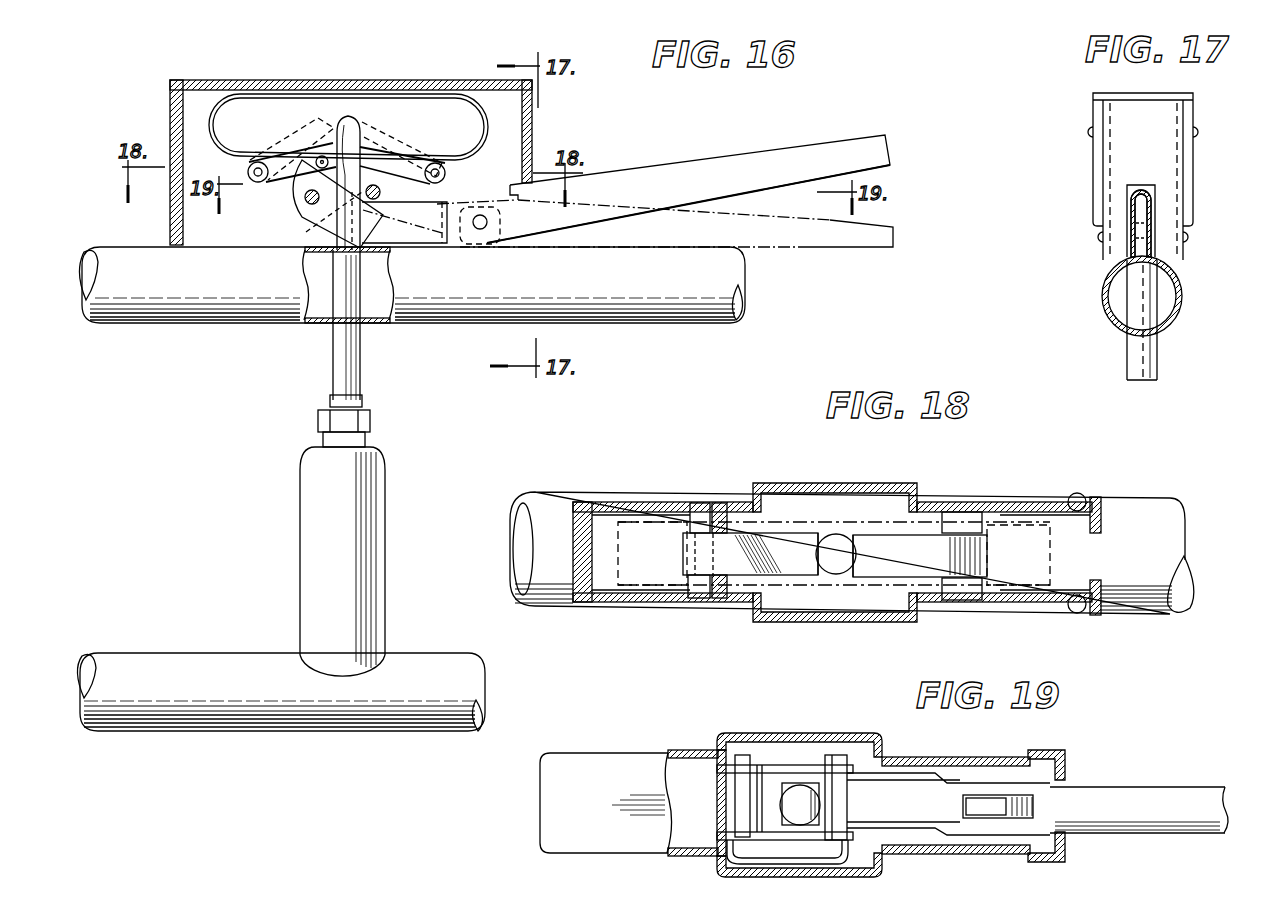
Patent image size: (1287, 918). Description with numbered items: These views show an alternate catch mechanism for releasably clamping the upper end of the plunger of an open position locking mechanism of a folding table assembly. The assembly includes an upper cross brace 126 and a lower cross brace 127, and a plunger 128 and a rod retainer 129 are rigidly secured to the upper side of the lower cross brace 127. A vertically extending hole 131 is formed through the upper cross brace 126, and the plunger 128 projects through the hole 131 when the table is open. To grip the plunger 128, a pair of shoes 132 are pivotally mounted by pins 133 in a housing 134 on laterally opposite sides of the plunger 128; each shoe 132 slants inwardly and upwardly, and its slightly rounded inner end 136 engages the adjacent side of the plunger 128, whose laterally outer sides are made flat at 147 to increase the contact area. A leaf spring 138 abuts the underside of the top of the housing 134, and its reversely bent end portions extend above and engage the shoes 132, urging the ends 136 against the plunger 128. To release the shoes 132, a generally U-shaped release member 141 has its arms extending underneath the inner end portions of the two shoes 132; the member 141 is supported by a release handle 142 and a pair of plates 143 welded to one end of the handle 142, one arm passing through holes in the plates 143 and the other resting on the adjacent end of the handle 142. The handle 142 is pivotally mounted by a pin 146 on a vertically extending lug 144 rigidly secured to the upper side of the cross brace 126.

In FIG. 16, the upper cross brace 126 is at (684, 322).
In FIG. 17, the upper cross brace 126 is at (1181, 307).
In FIG. 18, the upper cross brace 126 is at (552, 610).
In FIG. 16, the lower cross brace 127 is at (141, 658).
In FIG. 16, the plunger 128 is at (343, 370).
In FIG. 17, the plunger 128 is at (1158, 362).
In FIG. 18, the plunger 128 is at (838, 578).
In FIG. 16, the rod retainer 129 is at (302, 498).
In FIG. 16, the vertically extending hole 131 is at (362, 334).
In FIG. 16, the shoes 132 is at (290, 184).
In FIG. 18, the shoes 132 is at (880, 535).
In FIG. 16, the pins 133 is at (259, 162).
In FIG. 16, the housing 134 is at (380, 80).
In FIG. 17, the housing 134 is at (1195, 96).
In FIG. 16, the rounded inner end 136 is at (346, 172).
In FIG. 16, the spring 138 is at (213, 102).
In FIG. 18, the spring 138 is at (632, 520).
In FIG. 16, the U-shaped release member 141 is at (308, 205).
In FIG. 19, the U-shaped release member 141 is at (736, 800).
In FIG. 16, the release handle 142 is at (847, 148).
In FIG. 17, the release handle 142 is at (1158, 184).
In FIG. 19, the release handle 142 is at (1152, 797).
In FIG. 16, the plates 143 is at (322, 218).
In FIG. 19, the plates 143 is at (771, 832).
In FIG. 16, the lug 144 is at (448, 250).
In FIG. 17, the lug 144 is at (1148, 202).
In FIG. 19, the lug 144 is at (1020, 820).
In FIG. 19, the pin 146 is at (990, 795).
In FIG. 19, the flat sides 147 is at (822, 812).